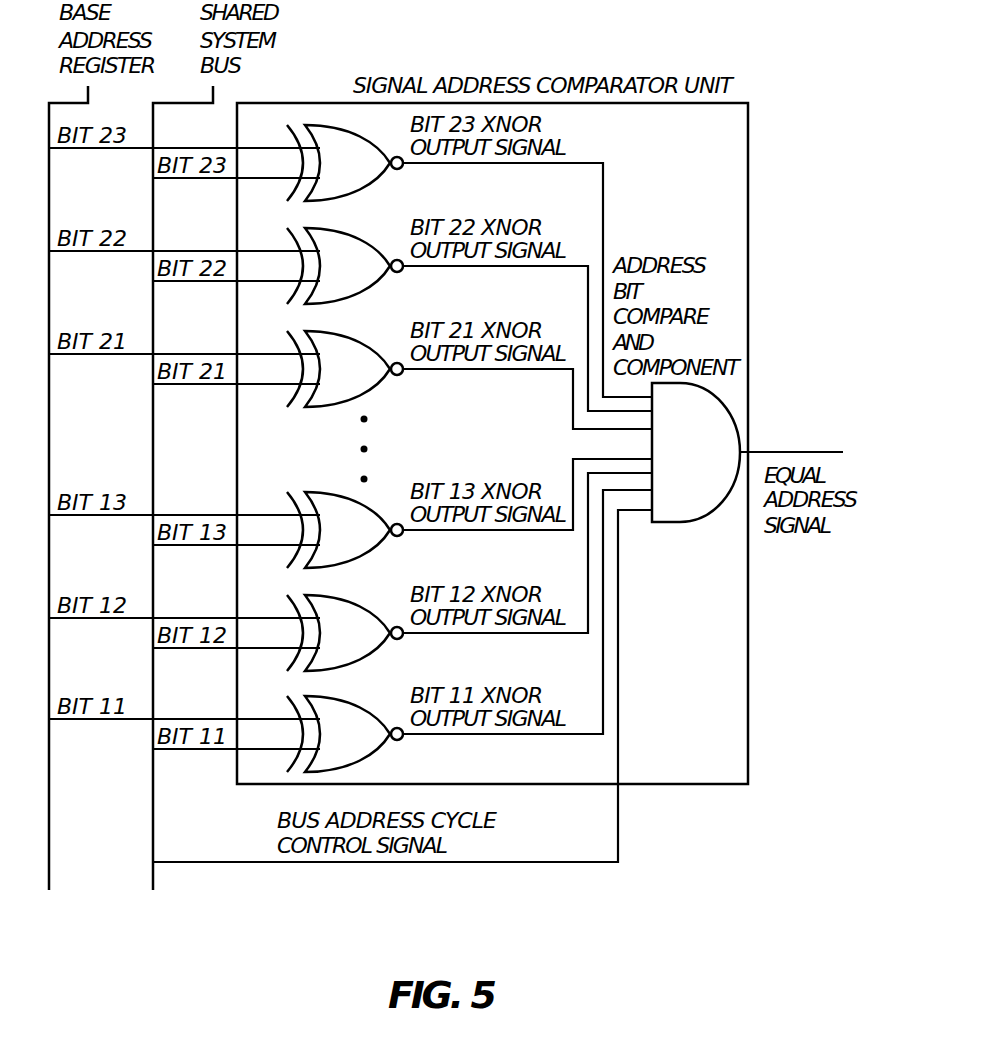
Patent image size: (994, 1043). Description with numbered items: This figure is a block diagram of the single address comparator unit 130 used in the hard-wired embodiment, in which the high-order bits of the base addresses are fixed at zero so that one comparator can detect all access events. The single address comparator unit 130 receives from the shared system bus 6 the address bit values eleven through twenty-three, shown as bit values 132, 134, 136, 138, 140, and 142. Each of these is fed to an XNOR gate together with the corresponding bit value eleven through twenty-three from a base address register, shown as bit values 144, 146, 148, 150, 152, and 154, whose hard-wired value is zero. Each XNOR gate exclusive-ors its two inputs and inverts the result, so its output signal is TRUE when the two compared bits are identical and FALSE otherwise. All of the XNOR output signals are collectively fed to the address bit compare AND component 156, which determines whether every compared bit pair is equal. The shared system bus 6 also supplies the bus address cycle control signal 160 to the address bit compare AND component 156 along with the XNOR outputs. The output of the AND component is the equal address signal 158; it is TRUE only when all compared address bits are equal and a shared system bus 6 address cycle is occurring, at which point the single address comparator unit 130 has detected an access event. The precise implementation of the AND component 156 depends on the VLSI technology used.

The shared system bus 6 is at (153, 142).
The single address comparator unit 130 is at (257, 103).
The shared system bus bit value 11 132 is at (402, 631).
The shared system bus bit value 12 134 is at (402, 572).
The shared system bus bit value 13 136 is at (402, 513).
The shared system bus bit value 21 138 is at (402, 380).
The shared system bus bit value 22 140 is at (402, 319).
The shared system bus bit value 23 142 is at (402, 261).
The base address register bit value 11 144 is at (184, 706).
The base address register bit value 12 146 is at (184, 605).
The base address register bit value 13 148 is at (184, 502).
The base address register bit value 21 150 is at (184, 341).
The base address register bit value 22 152 is at (184, 238).
The base address register bit value 23 154 is at (184, 135).
The address bit compare AND component 156 is at (672, 523).
The equal address signal 158 is at (763, 450).
The bus address cycle control signal 160 is at (173, 862).